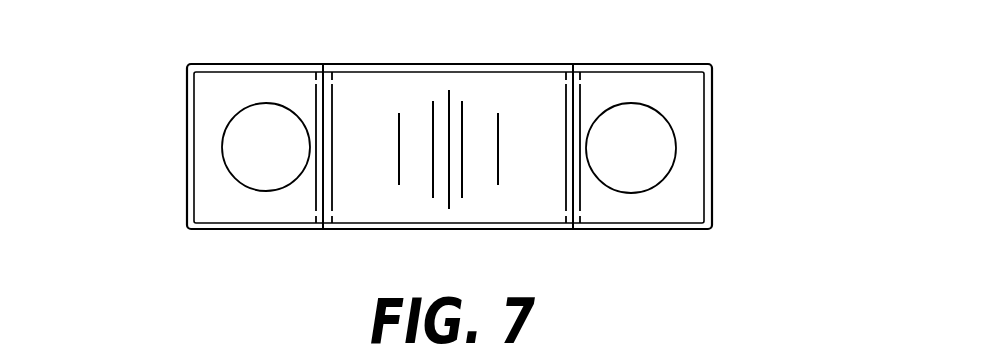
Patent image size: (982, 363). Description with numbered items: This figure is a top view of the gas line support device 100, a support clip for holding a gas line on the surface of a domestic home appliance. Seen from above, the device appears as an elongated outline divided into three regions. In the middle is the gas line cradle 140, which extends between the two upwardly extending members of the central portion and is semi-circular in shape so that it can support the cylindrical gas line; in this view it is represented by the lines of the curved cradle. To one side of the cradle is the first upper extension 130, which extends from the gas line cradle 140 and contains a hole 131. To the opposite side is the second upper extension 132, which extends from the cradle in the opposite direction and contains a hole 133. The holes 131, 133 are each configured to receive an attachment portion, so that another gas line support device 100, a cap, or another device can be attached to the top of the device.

The gas line support device 100 is at (146, 186).
The first upper extension 130 is at (237, 64).
The hole 131 is at (248, 143).
The second upper extension 132 is at (665, 64).
The hole 133 is at (642, 143).
The gas line cradle 140 is at (486, 116).